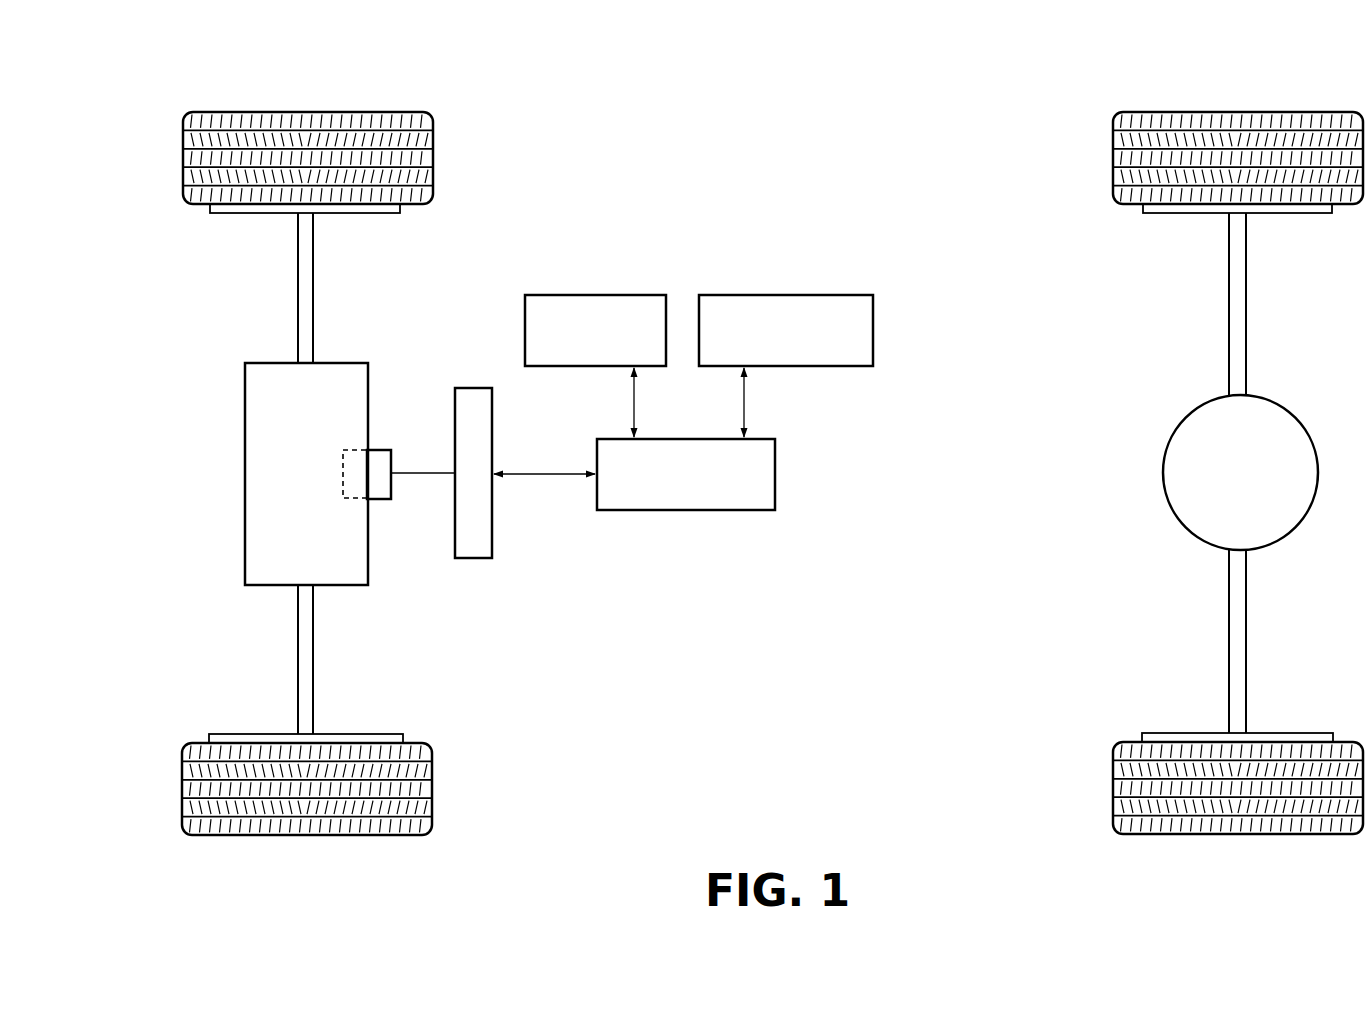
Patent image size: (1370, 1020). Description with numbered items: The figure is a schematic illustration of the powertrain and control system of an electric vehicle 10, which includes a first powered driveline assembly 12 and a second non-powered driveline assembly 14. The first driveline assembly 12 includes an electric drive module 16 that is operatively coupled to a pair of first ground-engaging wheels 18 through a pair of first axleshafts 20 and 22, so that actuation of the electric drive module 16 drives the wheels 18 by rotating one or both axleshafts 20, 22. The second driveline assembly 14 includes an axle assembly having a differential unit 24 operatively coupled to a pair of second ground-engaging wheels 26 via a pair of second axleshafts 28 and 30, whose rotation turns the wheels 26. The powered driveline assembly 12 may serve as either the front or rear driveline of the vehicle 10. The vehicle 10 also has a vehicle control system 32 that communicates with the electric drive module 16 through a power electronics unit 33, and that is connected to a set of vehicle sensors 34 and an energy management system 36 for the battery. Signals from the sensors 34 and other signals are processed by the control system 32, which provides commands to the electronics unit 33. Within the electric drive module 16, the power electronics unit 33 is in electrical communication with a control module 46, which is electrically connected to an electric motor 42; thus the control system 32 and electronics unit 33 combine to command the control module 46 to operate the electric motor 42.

The electric vehicle 10 is at (729, 635).
The first powered driveline assembly 12 is at (219, 542).
The second non-powered driveline assembly 14 is at (1130, 541).
The electric drive module 16 is at (347, 360).
The first ground-engaging wheels 18 is at (309, 112).
The first axleshaft 20 is at (297, 327).
The first axleshaft 22 is at (314, 680).
The differential unit 24 is at (1163, 455).
The second ground-engaging wheels 26 is at (1235, 112).
The second axleshaft 28 is at (1229, 325).
The second axleshaft 30 is at (1247, 680).
The vehicle control system 32 is at (775, 472).
The power electronics unit 33 is at (475, 388).
The vehicle sensors 34 is at (833, 295).
The energy management system 36 is at (632, 295).
The electric motor 42 is at (353, 450).
The control module 46 is at (378, 450).